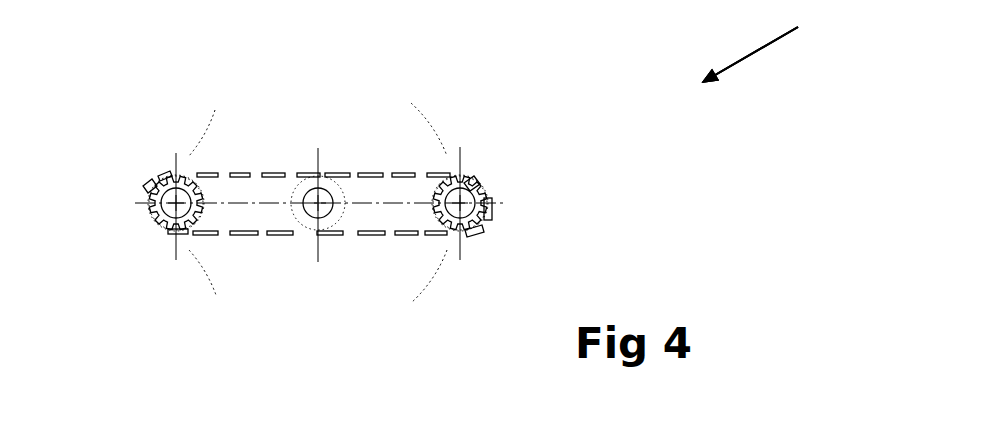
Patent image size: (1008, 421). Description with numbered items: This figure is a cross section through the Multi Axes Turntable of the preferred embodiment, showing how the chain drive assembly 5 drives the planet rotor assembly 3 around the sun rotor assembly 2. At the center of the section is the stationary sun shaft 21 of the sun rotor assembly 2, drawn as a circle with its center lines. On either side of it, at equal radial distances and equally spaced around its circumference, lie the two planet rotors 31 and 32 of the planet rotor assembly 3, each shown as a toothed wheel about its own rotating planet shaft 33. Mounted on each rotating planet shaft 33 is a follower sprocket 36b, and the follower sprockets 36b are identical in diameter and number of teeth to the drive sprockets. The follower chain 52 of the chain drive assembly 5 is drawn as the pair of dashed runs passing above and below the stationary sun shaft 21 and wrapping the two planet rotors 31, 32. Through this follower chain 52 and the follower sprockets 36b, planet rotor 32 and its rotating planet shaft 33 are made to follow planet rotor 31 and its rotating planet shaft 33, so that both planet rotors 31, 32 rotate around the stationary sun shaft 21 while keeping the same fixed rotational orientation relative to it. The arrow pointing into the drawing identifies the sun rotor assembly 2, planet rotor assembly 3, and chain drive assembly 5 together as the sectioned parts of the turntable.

The sun rotor assembly 2 is at (768, 54).
The planet rotor assembly 3 is at (768, 57).
The chain drive assembly 5 is at (768, 73).
The stationary sun shaft 21 is at (322, 187).
The planet rotor 31 is at (470, 178).
The planet rotor 32 is at (162, 188).
The rotating planet shaft 33 is at (162, 188).
The follower sprocket 36b is at (190, 215).
The follower chain 52 is at (265, 172).